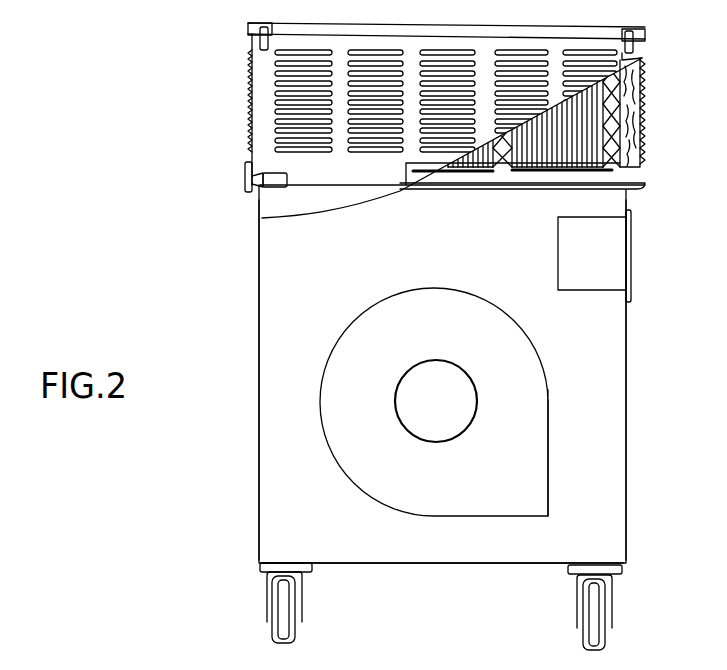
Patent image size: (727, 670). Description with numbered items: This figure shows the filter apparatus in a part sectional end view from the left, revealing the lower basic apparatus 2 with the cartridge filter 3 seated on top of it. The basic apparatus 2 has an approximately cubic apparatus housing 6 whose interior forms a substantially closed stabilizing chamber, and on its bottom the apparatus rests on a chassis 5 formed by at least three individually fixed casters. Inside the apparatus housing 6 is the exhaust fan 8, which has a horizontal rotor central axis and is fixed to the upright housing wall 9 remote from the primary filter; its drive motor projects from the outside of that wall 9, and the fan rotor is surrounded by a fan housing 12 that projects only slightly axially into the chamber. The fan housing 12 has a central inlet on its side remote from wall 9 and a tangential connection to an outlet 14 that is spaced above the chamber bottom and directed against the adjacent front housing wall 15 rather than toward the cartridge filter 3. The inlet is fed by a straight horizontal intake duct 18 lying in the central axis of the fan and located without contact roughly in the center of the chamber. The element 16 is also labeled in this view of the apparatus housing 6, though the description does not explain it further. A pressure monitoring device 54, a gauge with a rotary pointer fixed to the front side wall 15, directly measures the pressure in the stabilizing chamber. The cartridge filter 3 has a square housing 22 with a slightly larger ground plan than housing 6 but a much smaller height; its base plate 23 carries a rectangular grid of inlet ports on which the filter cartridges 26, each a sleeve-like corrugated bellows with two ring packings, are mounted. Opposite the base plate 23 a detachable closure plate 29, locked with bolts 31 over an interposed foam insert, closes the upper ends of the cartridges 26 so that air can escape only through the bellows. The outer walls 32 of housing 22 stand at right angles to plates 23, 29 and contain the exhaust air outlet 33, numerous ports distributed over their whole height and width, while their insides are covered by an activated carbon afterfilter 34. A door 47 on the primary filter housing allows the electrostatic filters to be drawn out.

The basic apparatus 2 is at (208, 372).
The cartridge filter 3 is at (214, 93).
The chassis 5 is at (255, 609).
The apparatus housing 6 is at (258, 565).
The exhaust fan 8 is at (448, 391).
The housing wall 9 is at (278, 434).
The fan housing 12 is at (341, 452).
The outlet 14 is at (548, 474).
The housing wall 15 is at (625, 357).
The bottom wall 16 is at (463, 540).
The intake duct 18 is at (433, 425).
The housing 22 is at (633, 191).
The base plate 23 is at (463, 165).
The filter cartridge 26 is at (551, 170).
The closure plate 29 is at (412, 25).
The bolts 31 is at (261, 38).
The outer walls 32 is at (258, 140).
The exhaust air outlet 33 is at (366, 133).
The afterfilter 34 is at (630, 92).
The door 47 is at (277, 181).
The pressure monitoring device 54 is at (558, 272).